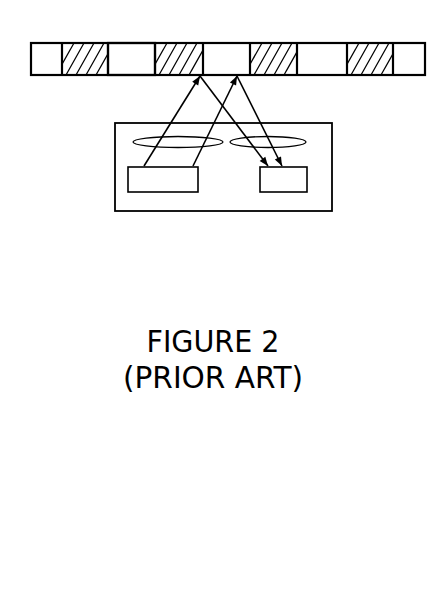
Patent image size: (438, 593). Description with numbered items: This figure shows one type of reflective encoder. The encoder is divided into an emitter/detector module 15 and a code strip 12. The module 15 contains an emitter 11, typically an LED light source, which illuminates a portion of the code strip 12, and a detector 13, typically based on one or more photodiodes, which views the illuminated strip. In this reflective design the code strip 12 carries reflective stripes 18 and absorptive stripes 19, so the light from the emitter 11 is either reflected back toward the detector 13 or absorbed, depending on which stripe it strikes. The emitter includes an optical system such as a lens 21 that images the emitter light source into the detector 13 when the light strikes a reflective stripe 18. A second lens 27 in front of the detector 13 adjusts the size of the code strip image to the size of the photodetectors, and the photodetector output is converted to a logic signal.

The emitter 11 is at (172, 190).
The code strip 12 is at (231, 94).
The detector 13 is at (265, 190).
The emitter/detector module 15 is at (332, 207).
The reflective stripes 18 is at (137, 73).
The absorptive stripes 19 is at (87, 75).
The lens 21 is at (134, 141).
The second lens 27 is at (303, 140).